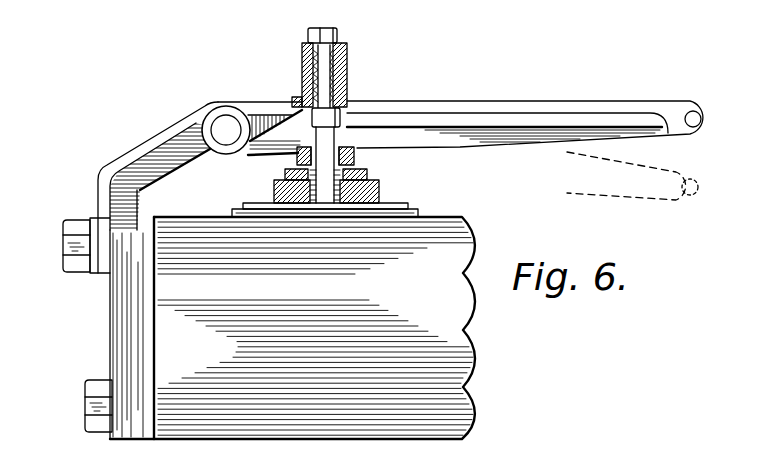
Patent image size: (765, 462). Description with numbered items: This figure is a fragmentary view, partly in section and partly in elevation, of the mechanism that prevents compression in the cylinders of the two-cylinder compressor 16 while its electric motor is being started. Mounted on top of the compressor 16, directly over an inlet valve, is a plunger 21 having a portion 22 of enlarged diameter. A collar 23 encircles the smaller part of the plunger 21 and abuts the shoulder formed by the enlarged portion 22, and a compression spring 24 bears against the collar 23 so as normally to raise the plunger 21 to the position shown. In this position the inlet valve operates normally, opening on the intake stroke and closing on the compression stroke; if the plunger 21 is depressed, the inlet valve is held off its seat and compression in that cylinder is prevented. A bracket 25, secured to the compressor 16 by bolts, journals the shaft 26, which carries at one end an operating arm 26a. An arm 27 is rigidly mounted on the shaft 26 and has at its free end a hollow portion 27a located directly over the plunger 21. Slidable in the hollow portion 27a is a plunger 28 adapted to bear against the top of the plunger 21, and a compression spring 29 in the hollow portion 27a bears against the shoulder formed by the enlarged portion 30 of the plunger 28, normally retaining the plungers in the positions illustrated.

The two-cylinder compressor 16 is at (292, 321).
The plunger 21 is at (362, 177).
The portion of enlarged diameter 22 is at (327, 143).
The collar 23 is at (350, 168).
The compression spring 24 is at (380, 193).
The bracket 25 is at (142, 162).
The shaft 26 is at (224, 122).
The operating arm 26a is at (558, 98).
The arm 27 is at (267, 110).
The hollow portion 27a is at (341, 42).
The plunger 28 is at (324, 87).
The compression spring 29 is at (348, 93).
The enlarged portion 30 is at (327, 120).